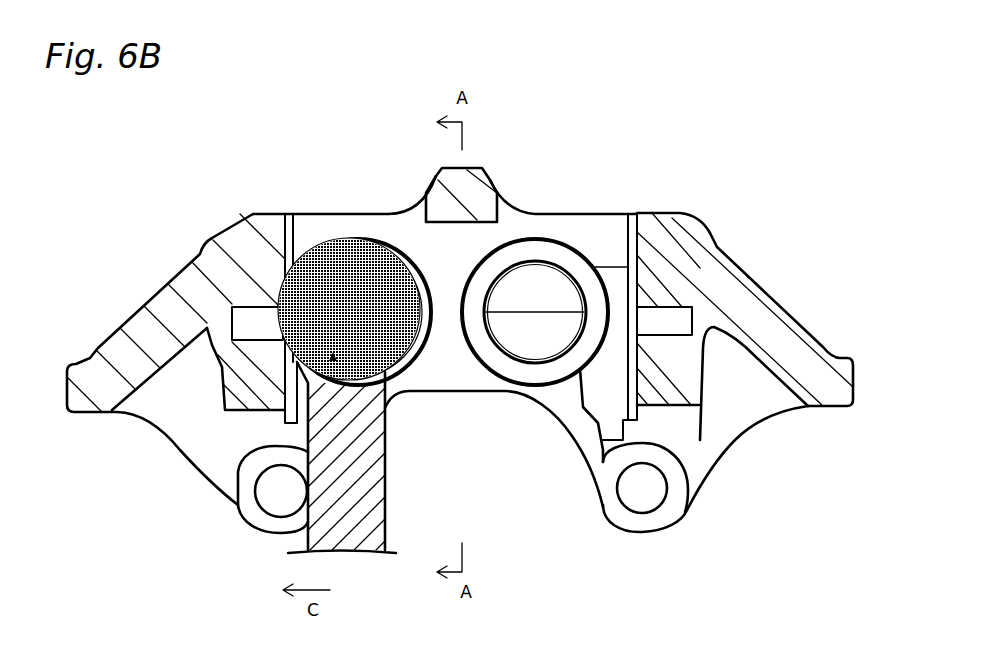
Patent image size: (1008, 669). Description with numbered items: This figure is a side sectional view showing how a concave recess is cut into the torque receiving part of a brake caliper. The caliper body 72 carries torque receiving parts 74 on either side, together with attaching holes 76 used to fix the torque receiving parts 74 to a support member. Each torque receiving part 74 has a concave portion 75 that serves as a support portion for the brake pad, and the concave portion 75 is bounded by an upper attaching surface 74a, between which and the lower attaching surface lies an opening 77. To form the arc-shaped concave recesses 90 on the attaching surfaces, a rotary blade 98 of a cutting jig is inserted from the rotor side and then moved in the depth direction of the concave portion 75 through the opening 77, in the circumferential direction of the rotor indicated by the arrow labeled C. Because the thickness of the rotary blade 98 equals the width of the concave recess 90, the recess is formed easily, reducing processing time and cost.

The caliper body 72 is at (655, 220).
The torque receiving part 74 is at (225, 365).
The upper attaching surface 74a is at (363, 412).
The concave portion 75 is at (243, 323).
The attaching hole 76 is at (282, 492).
The opening 77 is at (634, 320).
The concave recess 90 is at (258, 280).
The rotary blade 98 is at (320, 243).